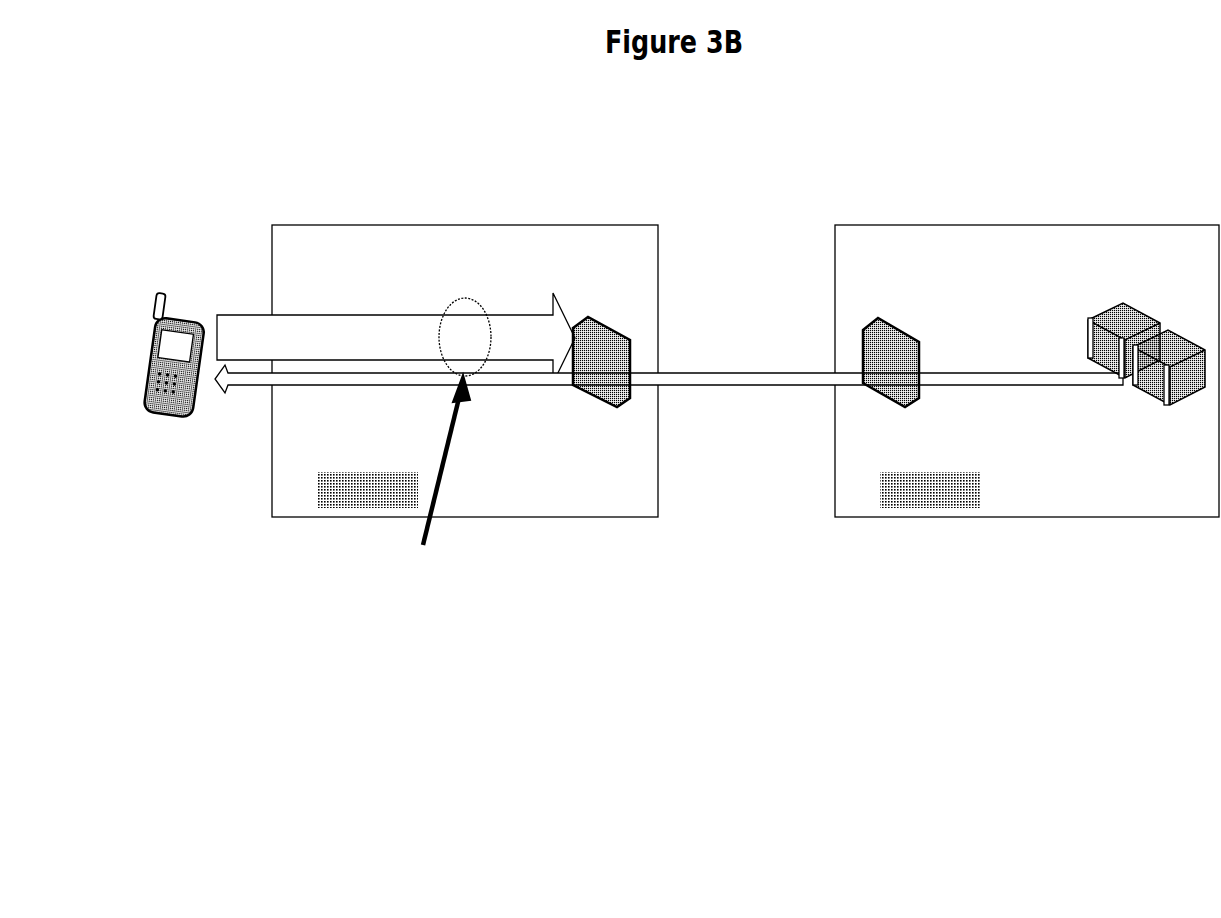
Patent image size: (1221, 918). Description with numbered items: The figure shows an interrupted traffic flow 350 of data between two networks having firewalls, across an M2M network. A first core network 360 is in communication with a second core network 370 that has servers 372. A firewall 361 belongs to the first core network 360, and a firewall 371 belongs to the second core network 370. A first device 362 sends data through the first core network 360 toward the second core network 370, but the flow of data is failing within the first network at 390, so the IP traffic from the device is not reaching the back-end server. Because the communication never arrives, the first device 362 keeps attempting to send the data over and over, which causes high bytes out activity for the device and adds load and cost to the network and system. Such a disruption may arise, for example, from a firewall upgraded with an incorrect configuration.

The interrupted traffic flow 350 is at (755, 833).
The first core network 360 is at (268, 250).
The firewall 361 is at (553, 314).
The first device 362 is at (142, 354).
The second core network 370 is at (890, 226).
The firewall 371 is at (855, 324).
The servers 372 is at (1092, 300).
The point of data flow failure 390 is at (440, 292).